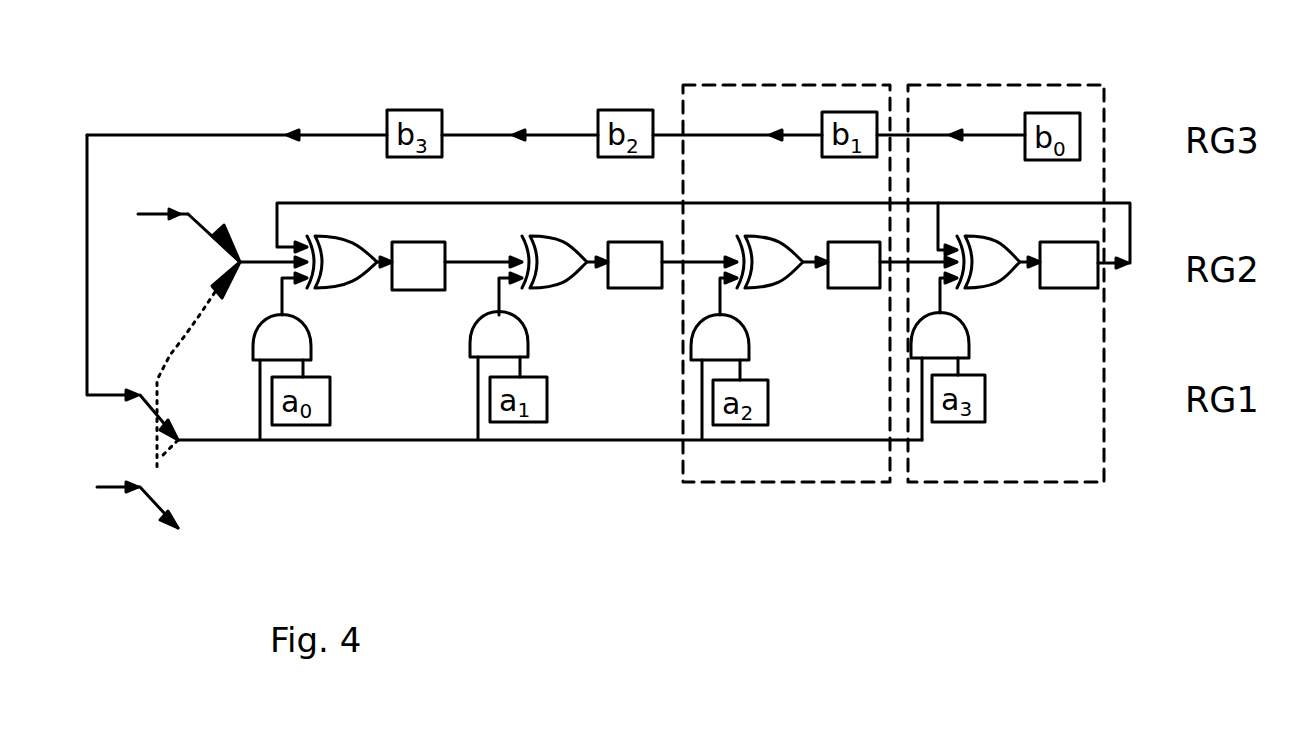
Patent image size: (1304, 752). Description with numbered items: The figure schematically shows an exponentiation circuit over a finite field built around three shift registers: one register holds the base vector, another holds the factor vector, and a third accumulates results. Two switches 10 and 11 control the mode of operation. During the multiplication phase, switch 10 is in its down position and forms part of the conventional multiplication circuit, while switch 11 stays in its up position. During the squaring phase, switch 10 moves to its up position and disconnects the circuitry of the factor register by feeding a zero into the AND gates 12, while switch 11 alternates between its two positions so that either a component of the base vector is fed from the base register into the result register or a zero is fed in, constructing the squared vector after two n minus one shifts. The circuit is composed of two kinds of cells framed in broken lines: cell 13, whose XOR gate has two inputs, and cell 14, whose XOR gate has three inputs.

The switch 10 is at (126, 461).
The switch 11 is at (176, 332).
The AND gate 12 is at (945, 332).
The circuit cell 13 is at (775, 97).
The circuit cell 14 is at (988, 100).